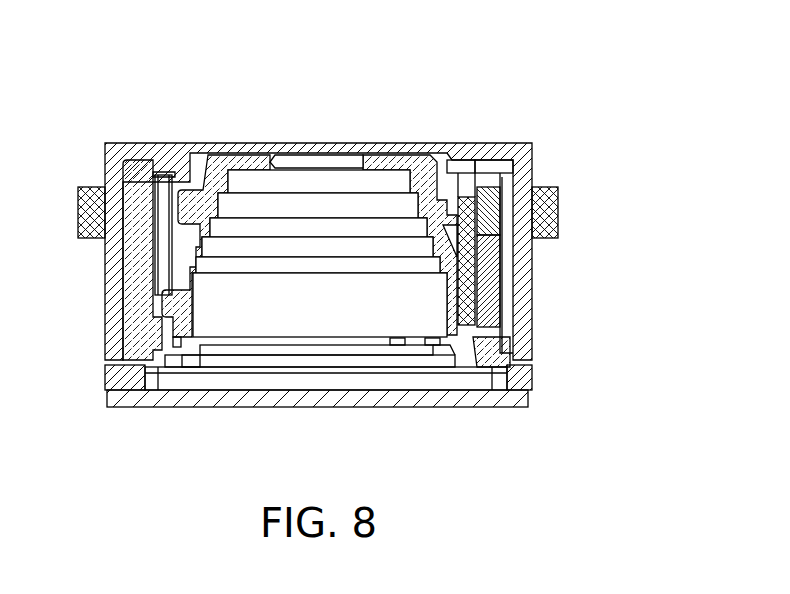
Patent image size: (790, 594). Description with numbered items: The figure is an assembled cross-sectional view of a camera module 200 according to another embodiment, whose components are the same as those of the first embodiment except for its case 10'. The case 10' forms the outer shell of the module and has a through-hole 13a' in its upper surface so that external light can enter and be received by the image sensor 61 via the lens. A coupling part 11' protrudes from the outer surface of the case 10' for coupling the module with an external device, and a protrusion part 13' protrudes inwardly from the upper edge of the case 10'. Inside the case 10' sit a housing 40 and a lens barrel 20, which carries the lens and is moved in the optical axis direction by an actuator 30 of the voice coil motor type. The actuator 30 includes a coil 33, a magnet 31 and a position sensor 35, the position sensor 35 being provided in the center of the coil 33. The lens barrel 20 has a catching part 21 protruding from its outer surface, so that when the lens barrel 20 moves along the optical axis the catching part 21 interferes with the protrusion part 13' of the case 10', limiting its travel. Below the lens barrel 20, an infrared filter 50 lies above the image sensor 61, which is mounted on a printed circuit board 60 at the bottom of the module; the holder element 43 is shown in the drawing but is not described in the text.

The camera module 200 is at (356, 51).
The case 10' is at (274, 266).
The coupling part 11' is at (308, 171).
The protrusion part 13' is at (209, 215).
The through-hole 13a' is at (417, 210).
The lens barrel 20 is at (223, 195).
The catching part 21 is at (267, 162).
The actuator 30 is at (555, 269).
The magnet 31 is at (508, 328).
The coil 33 is at (468, 318).
The position sensor 35 is at (498, 268).
The housing 40 is at (143, 322).
The sensor holder 43 is at (465, 360).
The infrared filter 50 is at (251, 360).
The printed circuit board 60 is at (383, 400).
The image sensor 61 is at (338, 383).